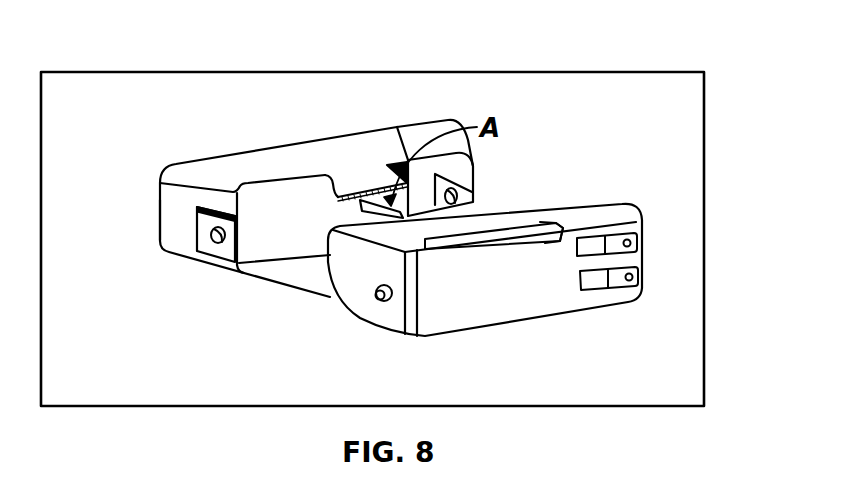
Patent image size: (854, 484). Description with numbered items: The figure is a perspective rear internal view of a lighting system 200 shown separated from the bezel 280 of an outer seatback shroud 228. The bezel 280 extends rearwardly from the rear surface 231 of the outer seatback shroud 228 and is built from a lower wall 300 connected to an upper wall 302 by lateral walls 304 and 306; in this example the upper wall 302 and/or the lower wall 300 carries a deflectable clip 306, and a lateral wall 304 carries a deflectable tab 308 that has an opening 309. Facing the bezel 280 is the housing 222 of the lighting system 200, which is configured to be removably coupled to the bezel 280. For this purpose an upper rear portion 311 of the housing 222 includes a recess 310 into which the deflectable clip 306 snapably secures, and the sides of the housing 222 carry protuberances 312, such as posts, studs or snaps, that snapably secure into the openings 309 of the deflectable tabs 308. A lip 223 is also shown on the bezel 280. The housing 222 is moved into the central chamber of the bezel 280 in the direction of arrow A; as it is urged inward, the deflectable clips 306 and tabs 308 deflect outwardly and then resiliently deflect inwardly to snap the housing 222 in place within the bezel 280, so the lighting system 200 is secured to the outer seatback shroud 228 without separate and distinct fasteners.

The power adapter 200 is at (657, 235).
The housing 222 is at (362, 283).
The lip 223 is at (307, 197).
The outer seatback shroud 228 is at (235, 120).
The rear surface 231 is at (350, 97).
The bezel 280 is at (413, 147).
The lower wall 300 is at (247, 287).
The upper wall 302 is at (240, 173).
The lateral wall 304 is at (167, 232).
The deflectable clip 306 is at (360, 175).
The deflectable tab 308 is at (197, 253).
The opening 309 is at (205, 250).
The recess 310 is at (537, 217).
The upper rear portion 311 is at (433, 246).
The protuberance 312 is at (377, 295).